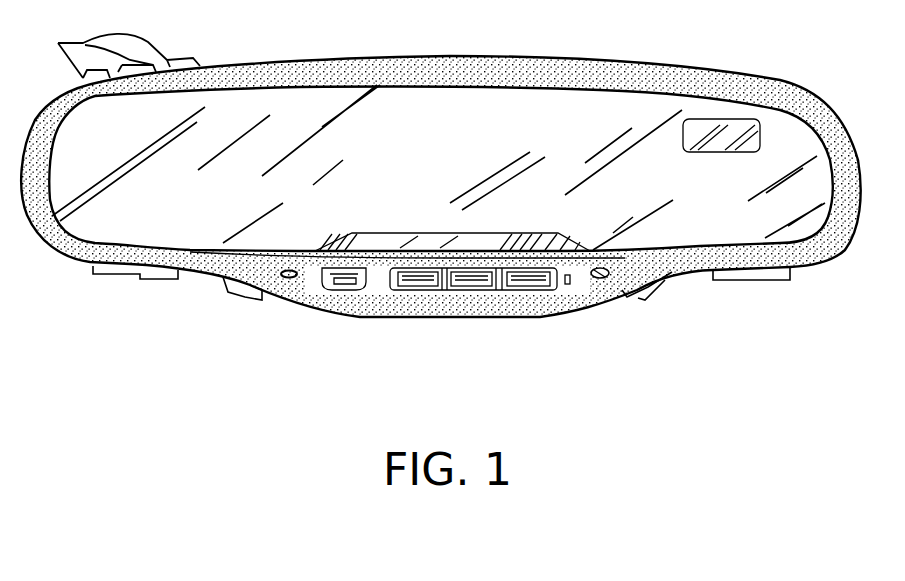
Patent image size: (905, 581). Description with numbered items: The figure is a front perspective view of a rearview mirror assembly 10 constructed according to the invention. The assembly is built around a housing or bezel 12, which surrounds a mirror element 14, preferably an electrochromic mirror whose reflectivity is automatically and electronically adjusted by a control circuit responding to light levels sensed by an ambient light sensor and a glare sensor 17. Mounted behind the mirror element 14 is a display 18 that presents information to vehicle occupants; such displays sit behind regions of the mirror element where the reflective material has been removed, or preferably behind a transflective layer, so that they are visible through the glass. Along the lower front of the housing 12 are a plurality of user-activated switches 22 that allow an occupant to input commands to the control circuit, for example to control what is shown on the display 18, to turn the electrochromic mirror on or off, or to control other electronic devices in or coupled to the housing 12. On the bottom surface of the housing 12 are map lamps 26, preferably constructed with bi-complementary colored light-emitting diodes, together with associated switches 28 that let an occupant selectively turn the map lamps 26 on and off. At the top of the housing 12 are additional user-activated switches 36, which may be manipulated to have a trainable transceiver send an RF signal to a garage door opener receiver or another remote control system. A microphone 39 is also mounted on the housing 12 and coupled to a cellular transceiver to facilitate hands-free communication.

The rearview mirror assembly 10 is at (447, 42).
The housing or bezel 12 is at (277, 64).
The mirror element 14 is at (517, 112).
The glare sensor 17 is at (595, 279).
The display 18 is at (540, 235).
The user-activated switches 22 is at (343, 290).
The map lamps 26 is at (133, 280).
The switches 28 is at (242, 296).
The additional user-activated switches 36 is at (115, 53).
The microphone 39 is at (477, 318).